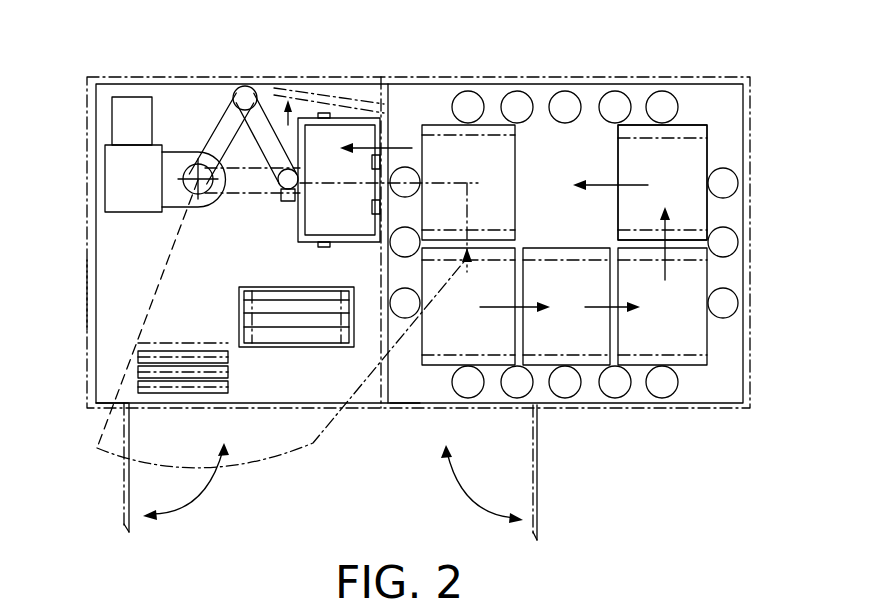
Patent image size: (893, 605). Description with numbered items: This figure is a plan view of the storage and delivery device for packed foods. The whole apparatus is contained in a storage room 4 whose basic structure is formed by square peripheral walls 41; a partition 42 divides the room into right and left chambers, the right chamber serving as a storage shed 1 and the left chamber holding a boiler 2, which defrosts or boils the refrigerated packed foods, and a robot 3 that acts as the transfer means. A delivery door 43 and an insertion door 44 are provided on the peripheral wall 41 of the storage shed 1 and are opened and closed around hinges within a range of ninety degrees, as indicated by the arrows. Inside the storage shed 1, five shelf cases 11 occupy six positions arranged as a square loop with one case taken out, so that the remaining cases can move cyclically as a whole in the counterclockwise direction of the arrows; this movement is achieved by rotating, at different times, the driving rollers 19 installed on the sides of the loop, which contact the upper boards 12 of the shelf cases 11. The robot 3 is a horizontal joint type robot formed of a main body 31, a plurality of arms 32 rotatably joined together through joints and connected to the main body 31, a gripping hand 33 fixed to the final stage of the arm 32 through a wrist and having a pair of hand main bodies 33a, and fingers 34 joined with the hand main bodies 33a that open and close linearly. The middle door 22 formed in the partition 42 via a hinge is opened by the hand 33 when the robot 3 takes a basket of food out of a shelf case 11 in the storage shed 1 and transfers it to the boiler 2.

The storage shed 1 is at (752, 380).
The boiler 2 is at (302, 347).
The robot 3 is at (106, 117).
The storage room 4 is at (86, 296).
The shelf case 11 is at (702, 148).
The upper board 12 is at (662, 182).
The driving roller 19 is at (733, 183).
The inside door 22 is at (274, 62).
The main body 31 is at (118, 178).
The arm 32 is at (228, 128).
The gripping hand 33 is at (284, 204).
The hand main body 33a is at (317, 118).
The finger 34 is at (382, 122).
The peripheral wall 41 is at (405, 410).
The partition 42 is at (380, 373).
The delivery door 43 is at (124, 516).
The insertion door 44 is at (540, 489).